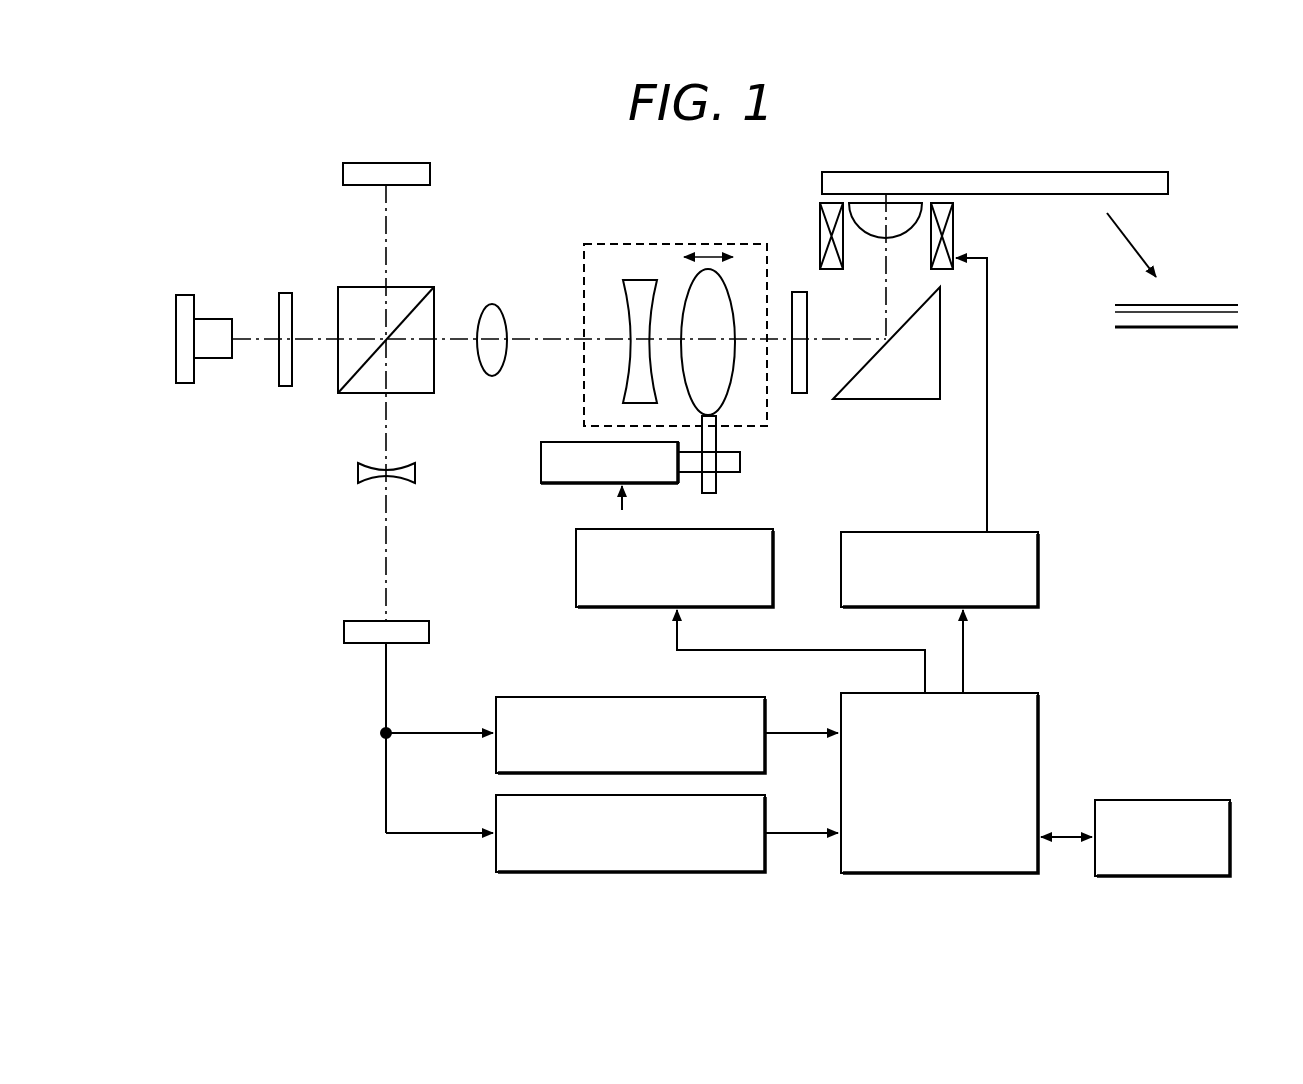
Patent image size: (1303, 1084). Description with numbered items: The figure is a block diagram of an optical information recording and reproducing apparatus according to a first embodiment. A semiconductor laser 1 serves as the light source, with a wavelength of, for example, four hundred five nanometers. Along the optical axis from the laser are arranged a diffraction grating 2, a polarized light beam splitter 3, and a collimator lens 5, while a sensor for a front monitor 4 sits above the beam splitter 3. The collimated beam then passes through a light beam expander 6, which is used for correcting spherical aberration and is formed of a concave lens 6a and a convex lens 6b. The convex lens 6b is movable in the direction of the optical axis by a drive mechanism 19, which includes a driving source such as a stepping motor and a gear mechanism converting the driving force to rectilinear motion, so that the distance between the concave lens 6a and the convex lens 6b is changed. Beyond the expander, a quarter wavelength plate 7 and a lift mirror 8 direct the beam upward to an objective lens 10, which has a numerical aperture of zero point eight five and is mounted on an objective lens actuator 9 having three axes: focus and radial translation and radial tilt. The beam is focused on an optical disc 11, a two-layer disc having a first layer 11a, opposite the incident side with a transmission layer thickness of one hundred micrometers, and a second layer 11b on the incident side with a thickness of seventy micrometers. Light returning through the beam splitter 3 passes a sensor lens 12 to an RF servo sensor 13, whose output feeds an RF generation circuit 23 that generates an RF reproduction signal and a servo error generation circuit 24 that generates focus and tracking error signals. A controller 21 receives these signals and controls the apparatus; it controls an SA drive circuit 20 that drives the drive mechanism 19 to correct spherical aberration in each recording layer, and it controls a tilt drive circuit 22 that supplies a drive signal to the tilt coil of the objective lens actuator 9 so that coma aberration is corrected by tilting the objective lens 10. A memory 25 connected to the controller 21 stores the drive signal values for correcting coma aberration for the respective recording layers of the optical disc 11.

The semiconductor laser 1 is at (188, 295).
The diffraction grating 2 is at (287, 293).
The polarized light beam splitter 3 is at (360, 287).
The sensor for a front monitor 4 is at (370, 163).
The collimator lens 5 is at (492, 304).
The light beam expander 6 is at (650, 244).
The concave lens 6a is at (623, 297).
The convex lens 6b is at (735, 283).
The quarter wavelength plate 7 is at (800, 395).
The lift mirror 8 is at (897, 400).
The objective lens actuator 9 is at (953, 222).
The objective lens 10 is at (872, 238).
The optical disc 11 is at (1022, 172).
The first layer 11a is at (1198, 305).
The second layer 11b is at (1172, 327).
The sensor lens 12 is at (358, 472).
The RF servo sensor 13 is at (344, 630).
The drive mechanism 19 is at (541, 460).
The SA drive circuit 20 is at (576, 565).
The controller 21 is at (1038, 733).
The tilt drive circuit 22 is at (1038, 568).
The RF generation circuit 23 is at (602, 697).
The servo error generation circuit 24 is at (598, 873).
The memory 25 is at (1190, 800).